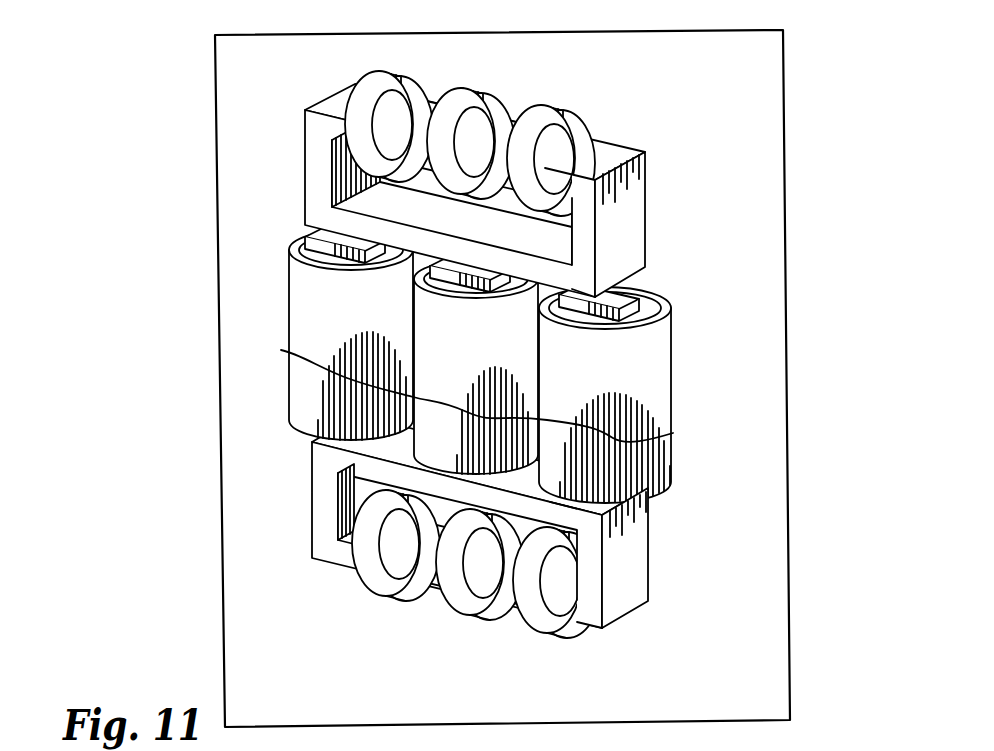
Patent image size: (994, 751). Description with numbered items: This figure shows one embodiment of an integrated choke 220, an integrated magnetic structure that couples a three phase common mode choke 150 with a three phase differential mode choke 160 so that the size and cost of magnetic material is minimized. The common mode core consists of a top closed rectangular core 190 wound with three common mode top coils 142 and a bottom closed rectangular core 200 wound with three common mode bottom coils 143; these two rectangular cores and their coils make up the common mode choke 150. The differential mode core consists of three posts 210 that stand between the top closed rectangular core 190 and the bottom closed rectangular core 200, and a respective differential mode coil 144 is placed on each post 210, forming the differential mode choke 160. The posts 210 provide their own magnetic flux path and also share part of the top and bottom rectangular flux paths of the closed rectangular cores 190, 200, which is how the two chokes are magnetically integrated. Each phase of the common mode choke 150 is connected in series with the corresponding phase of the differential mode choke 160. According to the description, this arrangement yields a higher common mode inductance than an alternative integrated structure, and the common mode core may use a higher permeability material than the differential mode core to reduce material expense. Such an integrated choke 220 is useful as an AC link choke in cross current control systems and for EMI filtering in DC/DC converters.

The common mode top coils 142 is at (600, 144).
The common mode bottom coils 143 is at (583, 630).
The differential mode coil 144 is at (618, 362).
The three phase common mode choke 150 is at (610, 108).
The three phase differential mode choke 160 is at (313, 455).
The top closed rectangular core 190 is at (585, 248).
The bottom closed rectangular core 200 is at (590, 587).
The posts 210 is at (638, 290).
The integrated choke 220 is at (748, 98).